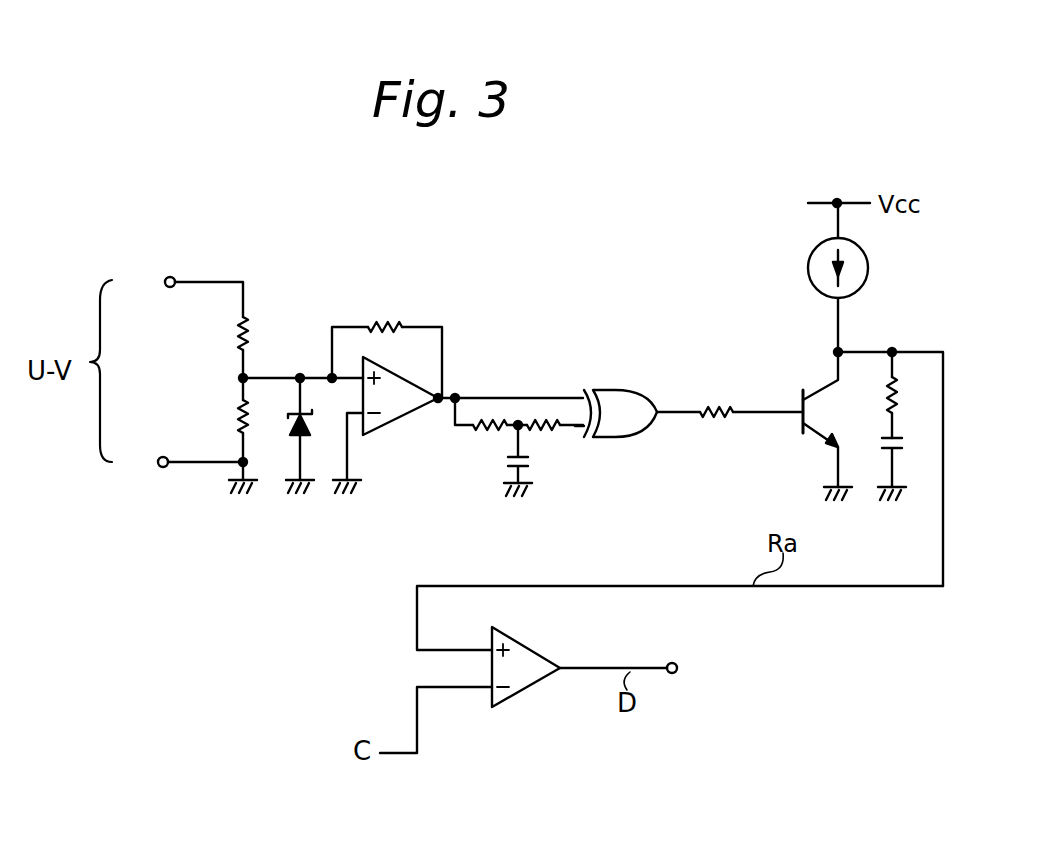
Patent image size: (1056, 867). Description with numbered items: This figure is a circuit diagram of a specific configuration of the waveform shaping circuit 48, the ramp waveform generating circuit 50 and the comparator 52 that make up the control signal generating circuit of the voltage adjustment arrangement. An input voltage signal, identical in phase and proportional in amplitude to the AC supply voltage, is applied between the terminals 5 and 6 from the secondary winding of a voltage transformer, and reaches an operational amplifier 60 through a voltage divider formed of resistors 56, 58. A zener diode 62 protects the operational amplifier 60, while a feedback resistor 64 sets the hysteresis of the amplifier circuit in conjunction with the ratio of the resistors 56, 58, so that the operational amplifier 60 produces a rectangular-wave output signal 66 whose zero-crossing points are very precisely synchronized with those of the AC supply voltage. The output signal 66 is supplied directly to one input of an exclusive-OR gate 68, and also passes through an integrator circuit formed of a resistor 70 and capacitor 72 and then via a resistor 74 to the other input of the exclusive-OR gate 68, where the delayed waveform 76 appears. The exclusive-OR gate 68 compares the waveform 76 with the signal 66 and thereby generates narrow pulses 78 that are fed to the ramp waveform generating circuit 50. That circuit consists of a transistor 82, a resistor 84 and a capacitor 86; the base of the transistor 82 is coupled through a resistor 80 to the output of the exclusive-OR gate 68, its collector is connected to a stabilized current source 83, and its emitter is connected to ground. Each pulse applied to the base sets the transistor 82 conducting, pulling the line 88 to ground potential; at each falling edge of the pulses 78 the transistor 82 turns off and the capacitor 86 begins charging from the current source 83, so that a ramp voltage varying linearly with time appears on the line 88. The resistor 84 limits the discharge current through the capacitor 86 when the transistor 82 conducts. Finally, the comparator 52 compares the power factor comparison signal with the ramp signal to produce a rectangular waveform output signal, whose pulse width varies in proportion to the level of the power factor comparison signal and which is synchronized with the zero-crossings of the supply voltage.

The terminal 5 is at (190, 281).
The terminal 6 is at (163, 467).
The waveform shaping circuit 48 is at (466, 322).
The ramp waveform generating circuit 50 is at (803, 335).
The comparator 52 is at (548, 656).
The resistor 56 is at (243, 337).
The resistor 58 is at (243, 418).
The operational amplifier 60 is at (398, 414).
The zener diode 62 is at (290, 430).
The feedback resistor 64 is at (383, 327).
The output signal 66 is at (455, 398).
The exclusive-OR gate 68 is at (620, 390).
The resistor 70 is at (483, 428).
The capacitor 72 is at (528, 470).
The resistor 74 is at (545, 428).
The waveform 76 is at (578, 432).
The narrow pulses 78 is at (700, 412).
The resistor 80 is at (725, 412).
The transistor 82 is at (803, 418).
The stabilized current source 83 is at (868, 268).
The resistor 84 is at (898, 405).
The capacitor 86 is at (900, 448).
The line 88 is at (925, 352).